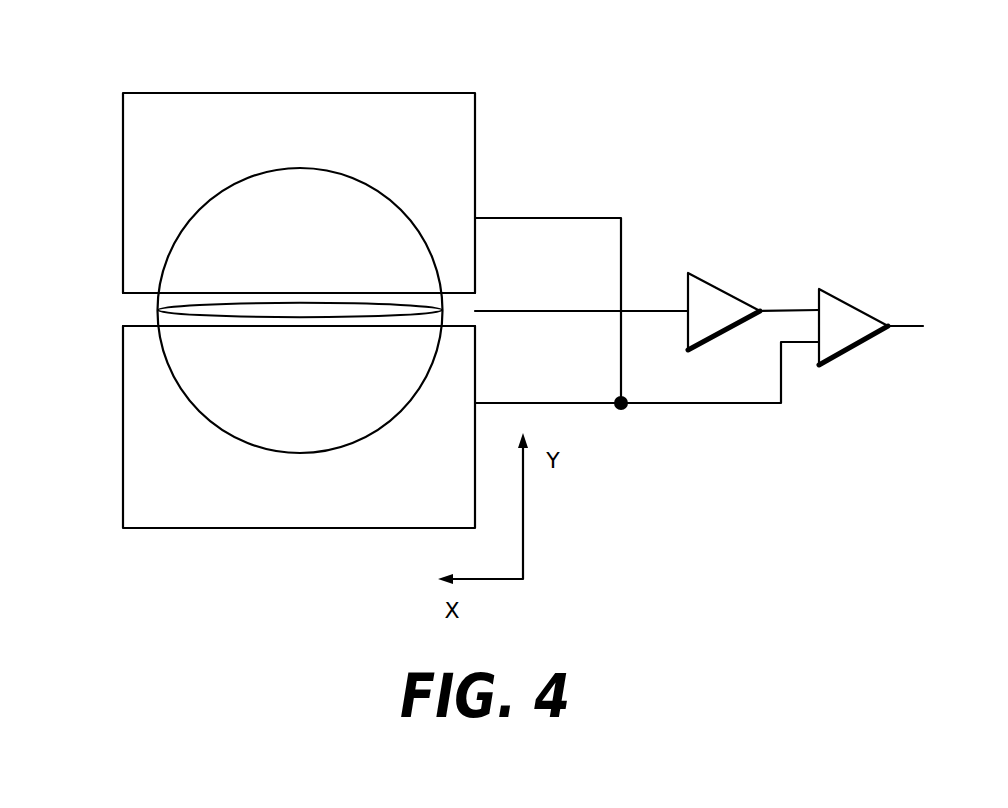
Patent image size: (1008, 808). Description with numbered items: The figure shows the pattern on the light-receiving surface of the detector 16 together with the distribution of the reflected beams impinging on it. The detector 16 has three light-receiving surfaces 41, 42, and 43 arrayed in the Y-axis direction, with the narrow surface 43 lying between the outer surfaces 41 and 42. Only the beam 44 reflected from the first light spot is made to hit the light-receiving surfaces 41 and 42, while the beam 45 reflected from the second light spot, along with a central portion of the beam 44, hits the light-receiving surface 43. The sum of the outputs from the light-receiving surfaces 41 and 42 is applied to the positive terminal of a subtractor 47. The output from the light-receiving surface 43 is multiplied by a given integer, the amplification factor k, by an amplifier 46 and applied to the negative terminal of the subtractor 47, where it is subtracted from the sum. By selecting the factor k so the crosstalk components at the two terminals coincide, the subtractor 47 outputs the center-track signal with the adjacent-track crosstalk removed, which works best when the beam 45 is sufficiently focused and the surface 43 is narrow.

The detector 16 is at (259, 268).
The light-receiving surface 41 is at (123, 138).
The light-receiving surface 42 is at (123, 482).
The light-receiving surface 43 is at (123, 307).
The reflected beam 44 is at (178, 237).
The reflected beam 45 is at (185, 316).
The amplifier 46 is at (712, 284).
The subtractor 47 is at (846, 300).